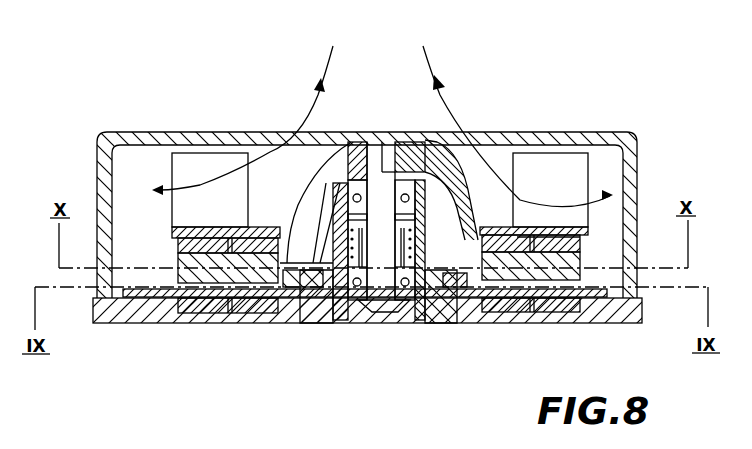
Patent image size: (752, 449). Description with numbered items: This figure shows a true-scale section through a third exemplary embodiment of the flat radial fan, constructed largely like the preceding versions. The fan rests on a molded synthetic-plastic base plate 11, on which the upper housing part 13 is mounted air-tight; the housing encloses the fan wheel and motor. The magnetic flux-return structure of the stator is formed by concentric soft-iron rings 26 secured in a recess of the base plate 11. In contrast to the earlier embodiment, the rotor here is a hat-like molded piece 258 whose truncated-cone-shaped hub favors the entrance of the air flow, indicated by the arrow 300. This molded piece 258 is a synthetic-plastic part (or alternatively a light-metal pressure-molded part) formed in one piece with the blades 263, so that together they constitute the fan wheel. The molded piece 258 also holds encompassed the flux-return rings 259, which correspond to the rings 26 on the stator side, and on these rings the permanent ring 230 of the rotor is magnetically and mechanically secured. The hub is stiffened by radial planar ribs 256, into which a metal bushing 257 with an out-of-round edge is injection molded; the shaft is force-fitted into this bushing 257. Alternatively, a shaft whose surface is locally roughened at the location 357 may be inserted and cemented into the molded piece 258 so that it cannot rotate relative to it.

The base plate 11 is at (627, 320).
The upper housing part 13 is at (612, 135).
The concentric rings 26 is at (570, 305).
The permanent ring 230 is at (177, 278).
The radial planar ribs 256 is at (298, 255).
The metal bushing 257 is at (340, 140).
The hat-like molded piece 258 is at (310, 192).
The flux-return rings 259 is at (517, 237).
The blades 263 is at (187, 157).
The arrow 300 is at (382, 112).
The location of roughened surface 357 is at (388, 137).